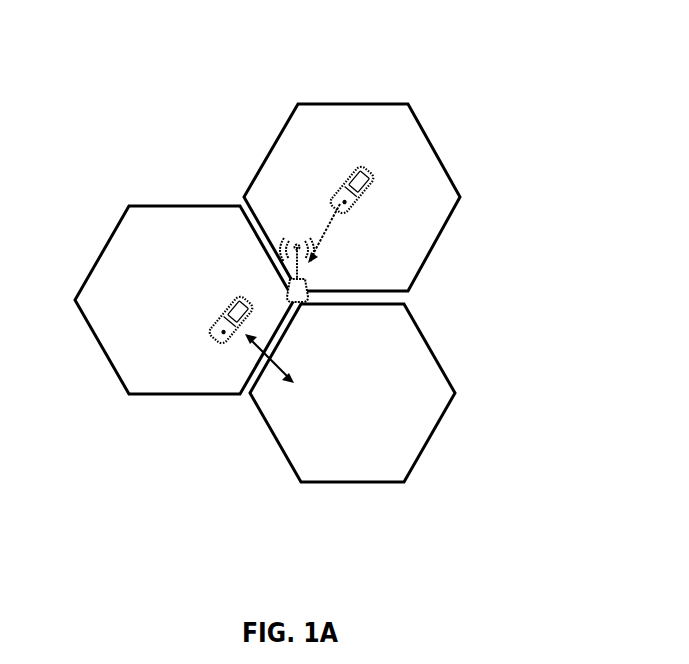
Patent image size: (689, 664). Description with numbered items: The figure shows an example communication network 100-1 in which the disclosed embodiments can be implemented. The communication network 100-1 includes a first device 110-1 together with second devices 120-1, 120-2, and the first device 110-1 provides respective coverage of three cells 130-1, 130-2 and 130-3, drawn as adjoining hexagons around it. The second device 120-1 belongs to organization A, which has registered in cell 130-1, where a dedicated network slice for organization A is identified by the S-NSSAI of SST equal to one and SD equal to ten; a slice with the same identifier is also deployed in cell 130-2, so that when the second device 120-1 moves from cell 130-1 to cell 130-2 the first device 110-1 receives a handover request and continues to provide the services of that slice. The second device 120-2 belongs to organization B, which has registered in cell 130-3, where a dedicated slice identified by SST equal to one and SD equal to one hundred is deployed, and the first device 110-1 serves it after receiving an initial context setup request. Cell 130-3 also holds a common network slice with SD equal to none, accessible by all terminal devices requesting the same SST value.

The communication network 100-1 is at (247, 112).
The first device 110-1 is at (307, 286).
The second device 120-1 is at (215, 327).
The second device 120-2 is at (337, 190).
The cell 130-1 is at (115, 373).
The cell 130-2 is at (443, 162).
The cell 130-3 is at (435, 355).